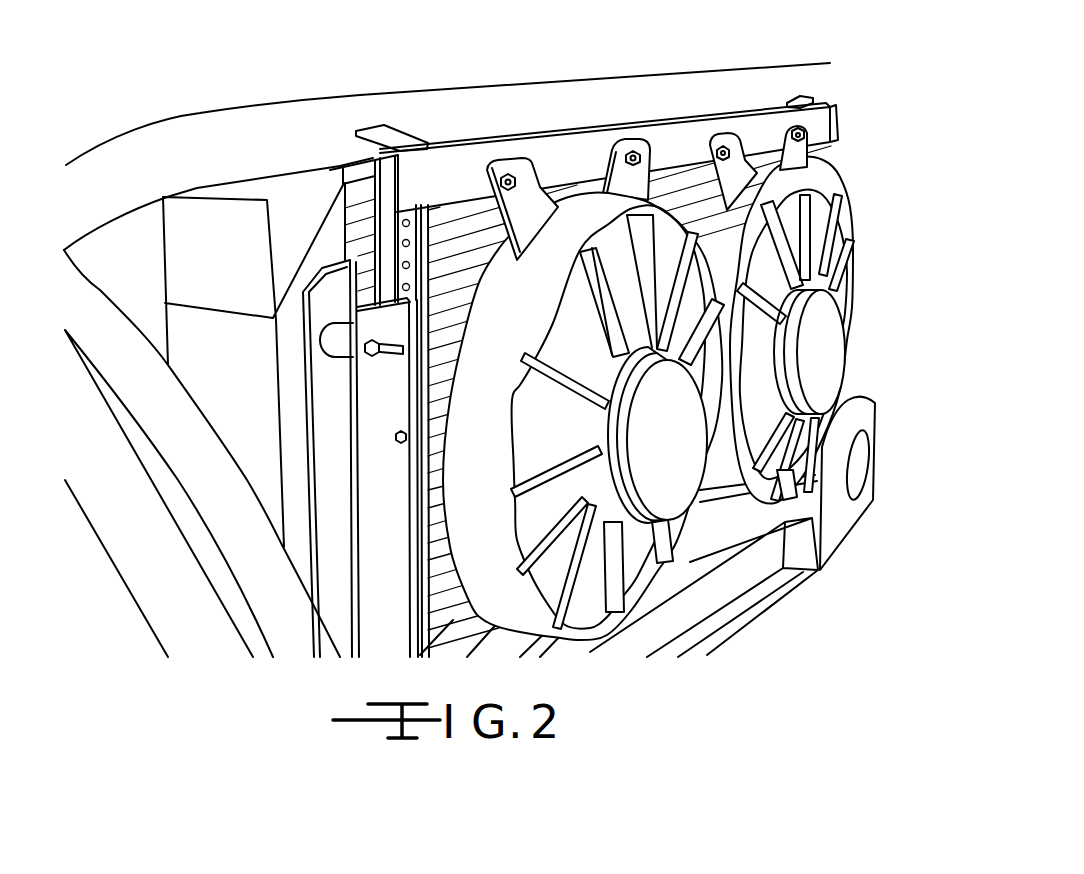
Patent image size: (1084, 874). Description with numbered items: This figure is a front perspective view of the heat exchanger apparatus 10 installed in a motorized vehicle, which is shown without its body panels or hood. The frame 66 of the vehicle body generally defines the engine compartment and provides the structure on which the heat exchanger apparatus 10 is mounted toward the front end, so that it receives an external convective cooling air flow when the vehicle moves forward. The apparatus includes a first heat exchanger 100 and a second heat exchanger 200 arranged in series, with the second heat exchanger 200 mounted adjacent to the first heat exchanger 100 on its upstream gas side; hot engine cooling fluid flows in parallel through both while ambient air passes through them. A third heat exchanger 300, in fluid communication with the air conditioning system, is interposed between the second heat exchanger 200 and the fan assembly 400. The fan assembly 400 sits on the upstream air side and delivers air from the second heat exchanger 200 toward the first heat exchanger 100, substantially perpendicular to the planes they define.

The heat exchanger apparatus 10 is at (767, 132).
The frame 66 is at (307, 127).
The first heat exchanger 100 is at (130, 247).
The second heat exchanger 200 is at (210, 218).
The third heat exchanger 300 is at (663, 153).
The fan assembly 400 is at (593, 203).